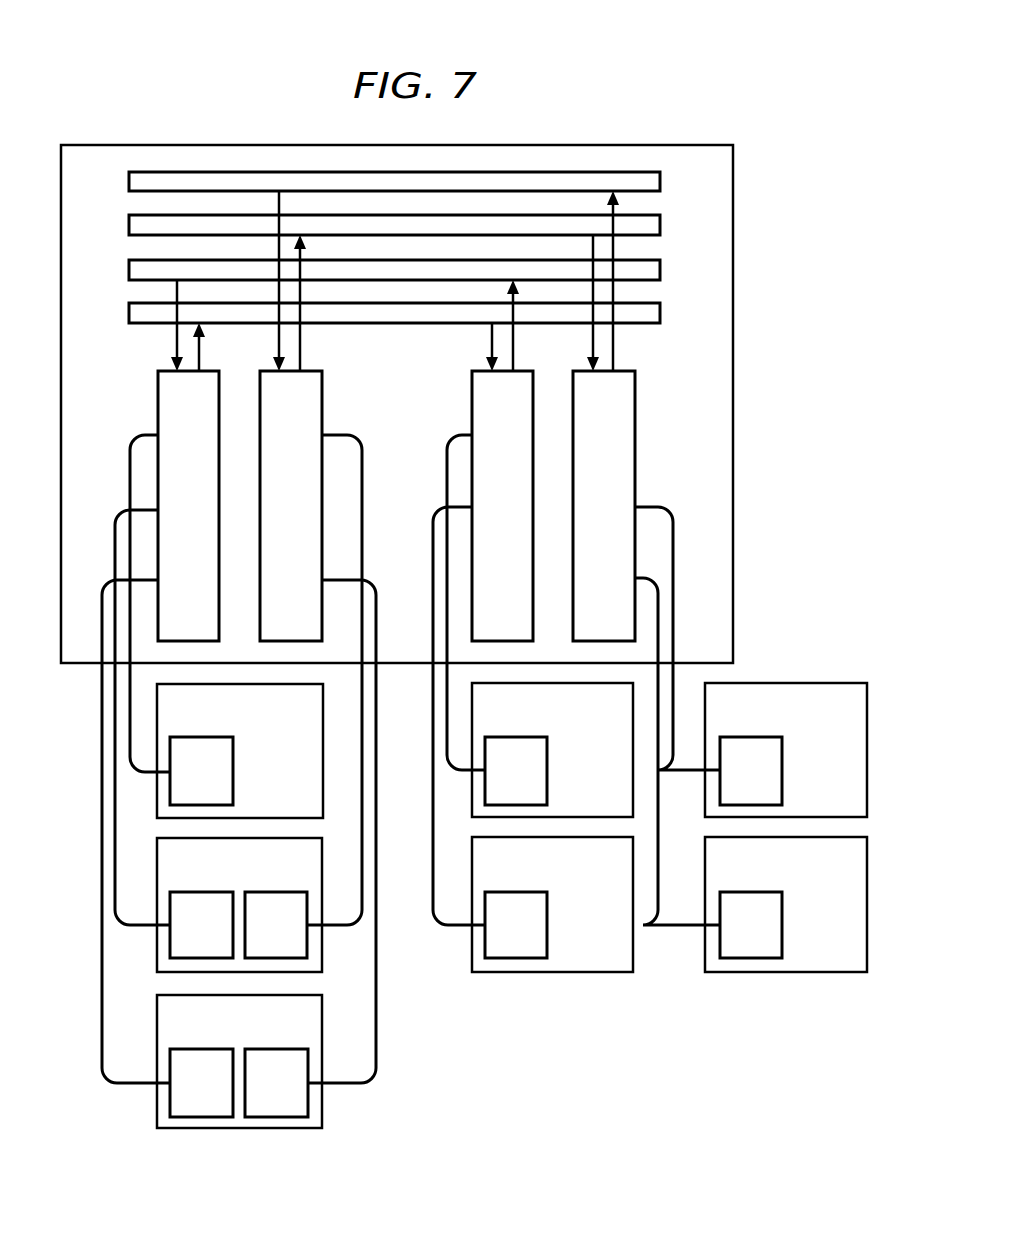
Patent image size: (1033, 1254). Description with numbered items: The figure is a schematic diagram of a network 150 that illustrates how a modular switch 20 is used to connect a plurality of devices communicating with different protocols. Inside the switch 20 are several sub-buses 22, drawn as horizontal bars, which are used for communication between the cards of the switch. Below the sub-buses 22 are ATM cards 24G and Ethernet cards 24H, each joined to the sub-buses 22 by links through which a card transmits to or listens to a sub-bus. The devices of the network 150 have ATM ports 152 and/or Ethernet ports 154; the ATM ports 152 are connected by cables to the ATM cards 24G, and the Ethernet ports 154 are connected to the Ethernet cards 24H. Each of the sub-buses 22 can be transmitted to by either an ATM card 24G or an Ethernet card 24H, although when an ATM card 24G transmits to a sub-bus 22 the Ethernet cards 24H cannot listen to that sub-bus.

The network 150 is at (84, 55).
The modular switch 20 is at (139, 145).
The sub-buses 22 is at (660, 186).
The ATM cards 24G is at (157, 383).
The Ethernet cards 24H is at (259, 383).
The ATM ports 152 is at (203, 736).
The Ethernet ports 154 is at (278, 891).